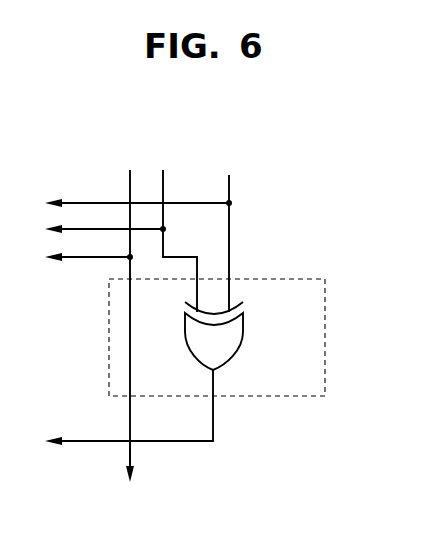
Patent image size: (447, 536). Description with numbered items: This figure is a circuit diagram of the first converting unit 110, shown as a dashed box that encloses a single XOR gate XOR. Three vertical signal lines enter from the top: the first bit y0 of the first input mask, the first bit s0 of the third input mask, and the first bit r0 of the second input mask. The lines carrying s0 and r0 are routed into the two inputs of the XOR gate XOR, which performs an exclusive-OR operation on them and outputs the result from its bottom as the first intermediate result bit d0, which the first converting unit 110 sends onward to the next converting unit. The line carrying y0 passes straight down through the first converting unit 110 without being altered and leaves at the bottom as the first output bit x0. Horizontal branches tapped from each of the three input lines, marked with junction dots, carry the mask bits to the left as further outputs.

The first converting unit 110 is at (253, 337).
The first bit of the first input mask y y0 is at (130, 312).
The first bit of the third input mask s s0 is at (174, 227).
The first bit of the second input mask r r0 is at (231, 227).
The first intermediate result bit d0 is at (129, 407).
The first output bit x0 is at (129, 475).
The XOR gate XOR is at (242, 338).